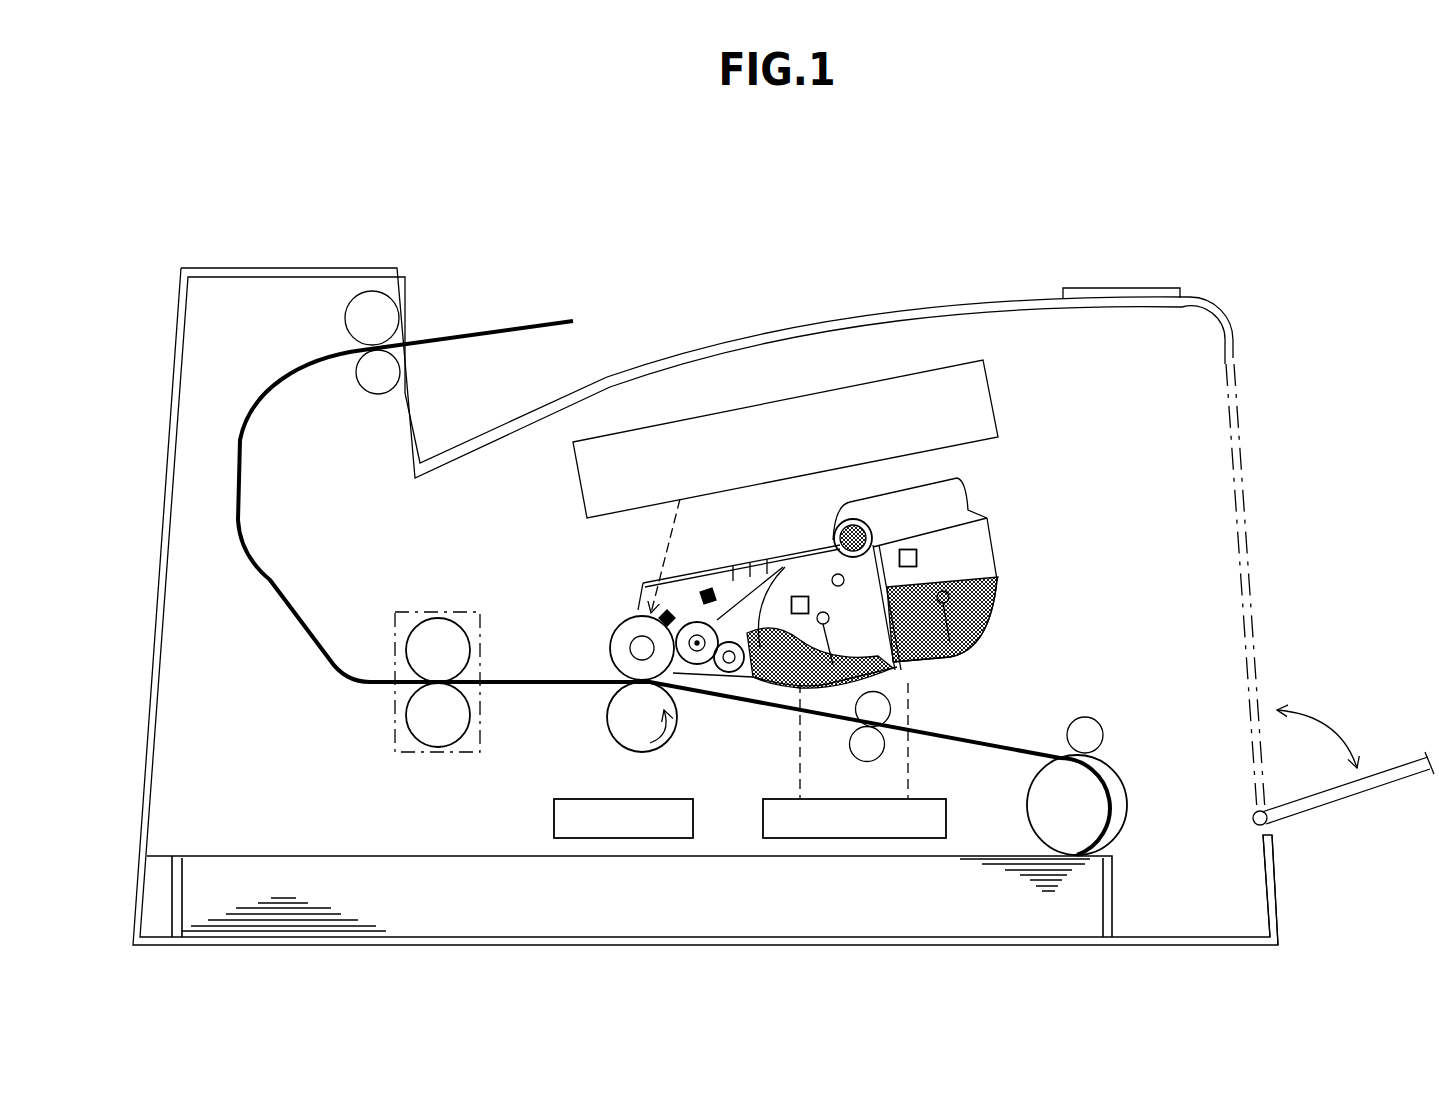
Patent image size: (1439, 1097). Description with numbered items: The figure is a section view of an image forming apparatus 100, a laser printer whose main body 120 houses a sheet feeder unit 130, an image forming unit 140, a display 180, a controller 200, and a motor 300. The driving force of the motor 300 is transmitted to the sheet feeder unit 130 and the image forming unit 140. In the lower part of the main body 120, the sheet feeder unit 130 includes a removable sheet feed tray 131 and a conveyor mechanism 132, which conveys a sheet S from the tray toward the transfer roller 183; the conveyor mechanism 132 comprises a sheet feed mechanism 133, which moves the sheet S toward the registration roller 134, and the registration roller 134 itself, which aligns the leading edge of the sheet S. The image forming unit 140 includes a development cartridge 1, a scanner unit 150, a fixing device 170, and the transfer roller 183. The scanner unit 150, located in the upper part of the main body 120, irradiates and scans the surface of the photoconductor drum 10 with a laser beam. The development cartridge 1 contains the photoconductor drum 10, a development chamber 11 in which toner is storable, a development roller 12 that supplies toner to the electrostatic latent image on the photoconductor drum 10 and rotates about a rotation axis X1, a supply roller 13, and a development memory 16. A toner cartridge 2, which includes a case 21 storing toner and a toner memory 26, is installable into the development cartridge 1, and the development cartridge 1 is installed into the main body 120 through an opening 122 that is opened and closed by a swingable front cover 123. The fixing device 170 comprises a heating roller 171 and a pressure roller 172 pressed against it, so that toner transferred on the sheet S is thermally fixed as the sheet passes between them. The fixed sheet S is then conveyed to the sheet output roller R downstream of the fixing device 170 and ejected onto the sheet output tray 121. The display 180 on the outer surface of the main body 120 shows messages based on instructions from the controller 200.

The image forming apparatus 100 is at (317, 177).
The main body 120 is at (178, 328).
The sheet output tray 121 is at (817, 320).
The opening 122 is at (1242, 358).
The front cover 123 is at (1258, 670).
The sheet feeder unit 130 is at (1160, 780).
The sheet feed tray 131 is at (1270, 880).
The conveyor mechanism 132 is at (1070, 688).
The sheet feed mechanism 133 is at (1118, 762).
The registration roller 134 is at (905, 718).
The image forming unit 140 is at (725, 393).
The scanner unit 150 is at (867, 392).
The fixing device 170 is at (477, 598).
The heating roller 171 is at (438, 627).
The pressure roller 172 is at (462, 714).
The display 180 is at (1137, 288).
The transfer roller 183 is at (612, 735).
The controller 200 is at (947, 812).
The motor 300 is at (653, 798).
The development cartridge 1 is at (758, 558).
The toner cartridge 2 is at (1000, 540).
The photoconductor drum 10 is at (610, 645).
The development chamber 11 is at (872, 636).
The development roller 12 is at (697, 625).
The supply roller 13 is at (735, 677).
The development memory 16 is at (803, 596).
The case 21 is at (977, 566).
The toner memory 26 is at (918, 556).
The sheet output roller R is at (360, 303).
The sheet S is at (507, 327).
The rotation axis X1 is at (682, 725).